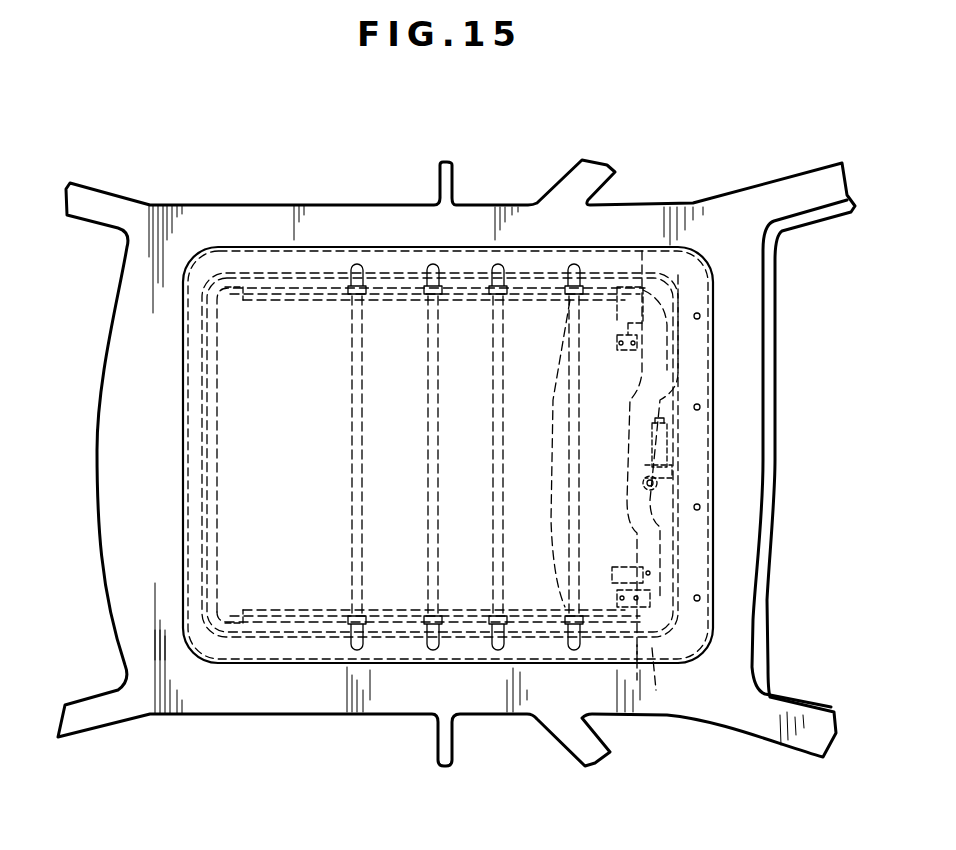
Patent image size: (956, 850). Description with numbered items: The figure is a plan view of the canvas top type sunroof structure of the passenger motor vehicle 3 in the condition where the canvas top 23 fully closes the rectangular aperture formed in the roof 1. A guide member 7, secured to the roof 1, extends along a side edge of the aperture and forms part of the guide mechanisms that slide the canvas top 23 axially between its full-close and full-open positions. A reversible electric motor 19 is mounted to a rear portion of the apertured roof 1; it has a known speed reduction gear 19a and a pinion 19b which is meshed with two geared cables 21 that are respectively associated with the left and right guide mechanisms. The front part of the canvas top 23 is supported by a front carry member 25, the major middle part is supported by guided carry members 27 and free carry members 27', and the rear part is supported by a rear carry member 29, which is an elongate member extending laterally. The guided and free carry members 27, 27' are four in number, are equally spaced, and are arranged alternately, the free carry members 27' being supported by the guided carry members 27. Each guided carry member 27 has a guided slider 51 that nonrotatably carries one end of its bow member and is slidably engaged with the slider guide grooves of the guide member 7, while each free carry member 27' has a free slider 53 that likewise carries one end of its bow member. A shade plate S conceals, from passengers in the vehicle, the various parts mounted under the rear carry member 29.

The roof 1 is at (128, 312).
The passenger motor vehicle 3 is at (224, 192).
The guide member 7 is at (388, 294).
The reversible electric motor 19 is at (665, 445).
The speed reduction gear 19a is at (675, 473).
The pinion 19b is at (657, 484).
The geared cable 21 is at (660, 408).
The canvas top 23 is at (325, 266).
The front carry member 25 is at (227, 505).
The guided carry member 27 is at (401, 455).
The free carry member 27' is at (479, 455).
The rear carry member 29 is at (651, 650).
The guided slider 51 is at (344, 302).
The free slider 53 is at (425, 303).
The shade plate S is at (562, 516).